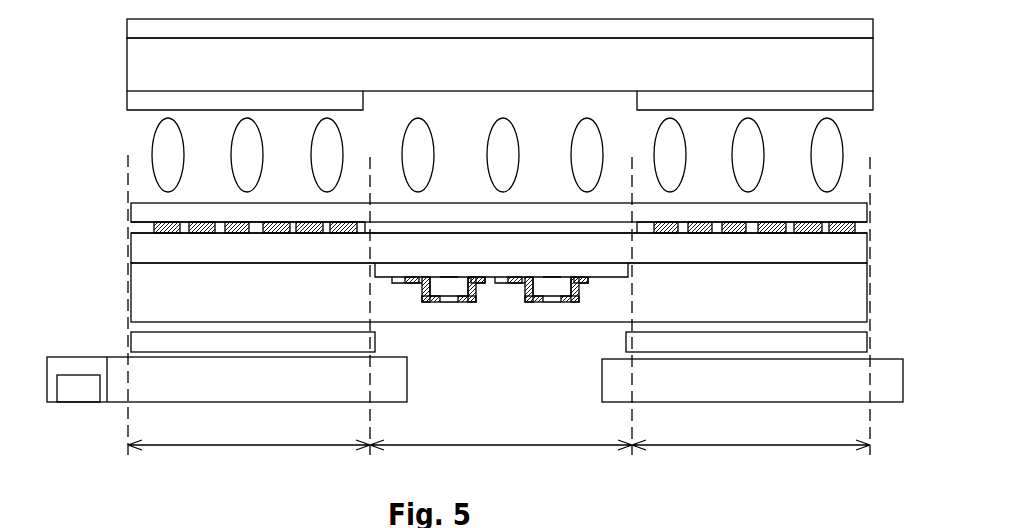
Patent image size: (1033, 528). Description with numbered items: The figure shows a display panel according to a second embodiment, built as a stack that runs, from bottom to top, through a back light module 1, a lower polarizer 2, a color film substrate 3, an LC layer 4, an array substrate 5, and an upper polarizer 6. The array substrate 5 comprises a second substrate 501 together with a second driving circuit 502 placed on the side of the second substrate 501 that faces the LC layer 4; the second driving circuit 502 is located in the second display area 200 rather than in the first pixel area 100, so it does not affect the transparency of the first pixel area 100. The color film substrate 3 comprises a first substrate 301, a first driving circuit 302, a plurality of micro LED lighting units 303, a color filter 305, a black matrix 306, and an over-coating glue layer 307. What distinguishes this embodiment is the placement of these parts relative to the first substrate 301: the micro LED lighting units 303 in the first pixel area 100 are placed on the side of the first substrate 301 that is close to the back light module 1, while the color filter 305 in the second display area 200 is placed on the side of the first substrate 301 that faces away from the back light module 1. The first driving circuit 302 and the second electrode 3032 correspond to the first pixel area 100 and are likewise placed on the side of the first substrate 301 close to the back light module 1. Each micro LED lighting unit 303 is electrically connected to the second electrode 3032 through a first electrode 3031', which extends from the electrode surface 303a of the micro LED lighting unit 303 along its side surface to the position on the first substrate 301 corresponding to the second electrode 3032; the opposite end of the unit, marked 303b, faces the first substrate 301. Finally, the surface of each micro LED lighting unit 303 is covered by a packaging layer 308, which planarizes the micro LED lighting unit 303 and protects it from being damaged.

The back light module 1 is at (887, 388).
The lower polarizer 2 is at (860, 345).
The color film substrate 3 is at (103, 291).
The LC layer 4 is at (103, 158).
The array substrate 5 is at (103, 75).
The upper polarizer 6 is at (867, 30).
The first pixel area 100 is at (501, 436).
The second display area 200 is at (499, 436).
The first substrate 301 is at (140, 250).
The first driving circuit 302 is at (391, 272).
The micro LED lighting unit 303 is at (491, 274).
The electrode surface 303a is at (453, 308).
The top of light emitting unit 303b is at (451, 267).
The first electrode 3031' is at (500, 315).
The second electrode 3032 is at (492, 280).
The color filter 305 is at (812, 222).
The black matrix 306 is at (823, 233).
The over-coating (OC) glue layer 307 is at (140, 212).
The packaging layer 308 is at (860, 307).
The second substrate 501 is at (860, 66).
The second driving circuit 502 is at (860, 103).